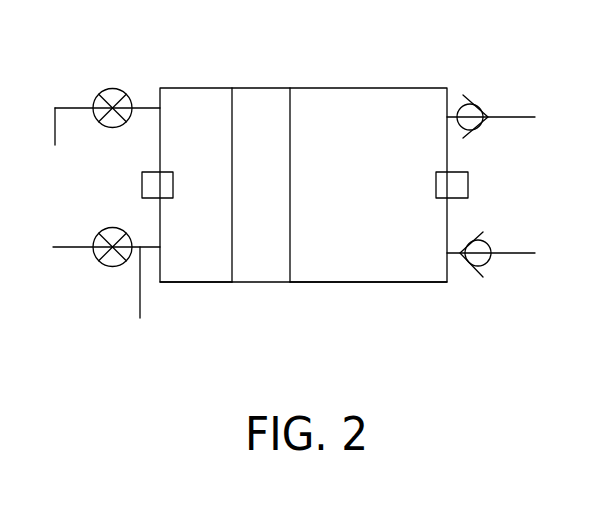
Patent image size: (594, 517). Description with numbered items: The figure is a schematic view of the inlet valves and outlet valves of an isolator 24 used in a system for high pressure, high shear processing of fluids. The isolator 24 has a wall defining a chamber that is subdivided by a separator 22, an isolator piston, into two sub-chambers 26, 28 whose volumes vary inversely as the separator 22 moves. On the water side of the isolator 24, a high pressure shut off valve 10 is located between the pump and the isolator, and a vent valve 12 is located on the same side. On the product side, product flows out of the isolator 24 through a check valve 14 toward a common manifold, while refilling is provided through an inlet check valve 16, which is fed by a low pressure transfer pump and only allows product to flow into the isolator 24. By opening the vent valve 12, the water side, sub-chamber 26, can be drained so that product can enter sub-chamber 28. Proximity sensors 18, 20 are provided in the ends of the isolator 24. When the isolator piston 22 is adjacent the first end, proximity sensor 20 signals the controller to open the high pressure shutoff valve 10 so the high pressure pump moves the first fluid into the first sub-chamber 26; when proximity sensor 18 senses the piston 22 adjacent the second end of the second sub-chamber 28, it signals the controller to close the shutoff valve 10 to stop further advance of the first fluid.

The high pressure shut off valve 10 is at (95, 253).
The vent valve 12 is at (112, 88).
The check valve 14 is at (492, 260).
The inlet check valve 16 is at (482, 108).
The proximity sensor 18 is at (468, 175).
The proximity sensor 20 is at (140, 174).
The separator 22 is at (257, 123).
The isolator 24 is at (358, 66).
The sub-chamber 26 is at (200, 255).
The sub-chamber 28 is at (360, 255).